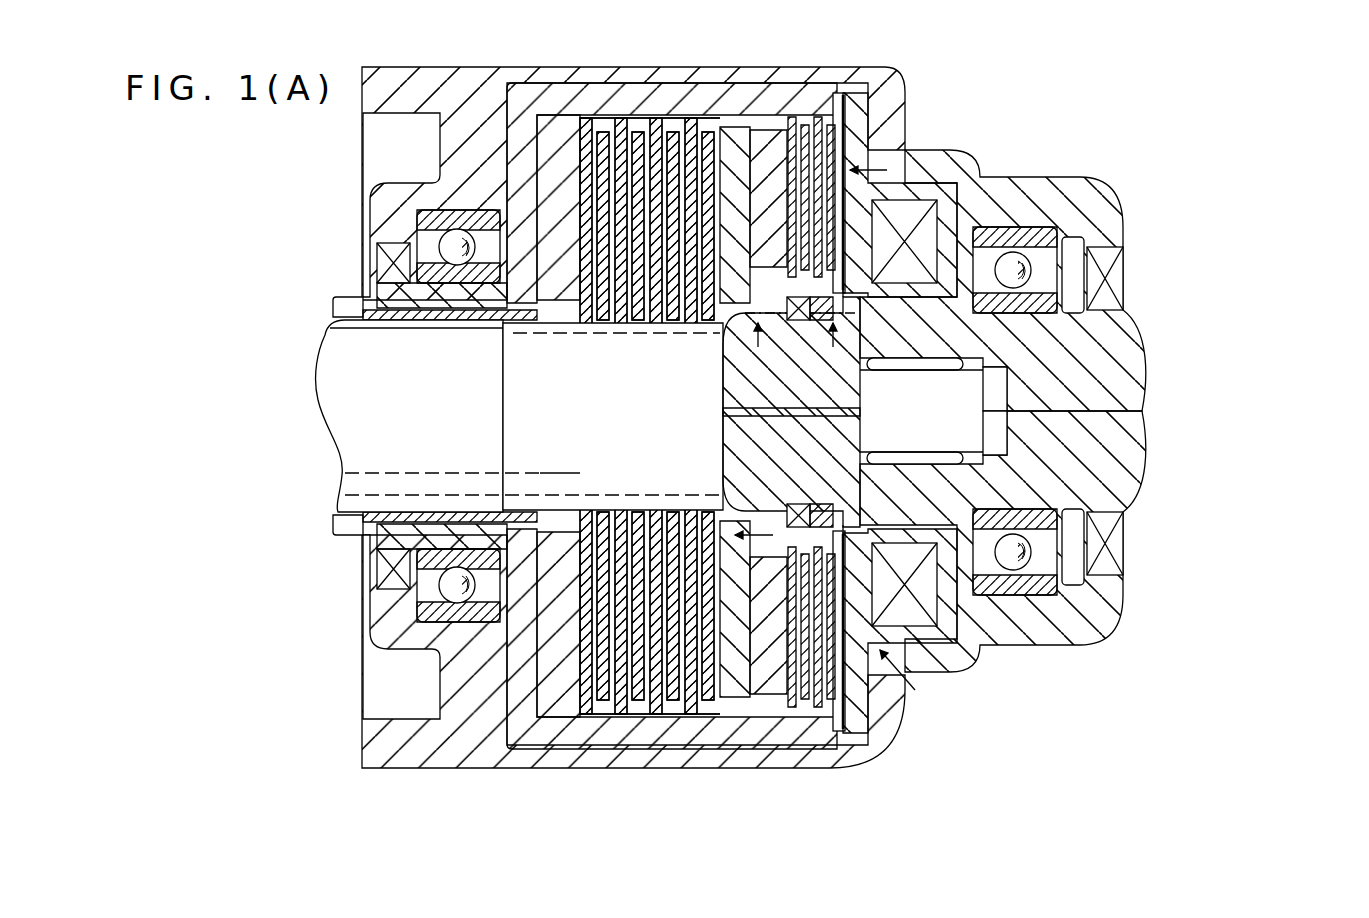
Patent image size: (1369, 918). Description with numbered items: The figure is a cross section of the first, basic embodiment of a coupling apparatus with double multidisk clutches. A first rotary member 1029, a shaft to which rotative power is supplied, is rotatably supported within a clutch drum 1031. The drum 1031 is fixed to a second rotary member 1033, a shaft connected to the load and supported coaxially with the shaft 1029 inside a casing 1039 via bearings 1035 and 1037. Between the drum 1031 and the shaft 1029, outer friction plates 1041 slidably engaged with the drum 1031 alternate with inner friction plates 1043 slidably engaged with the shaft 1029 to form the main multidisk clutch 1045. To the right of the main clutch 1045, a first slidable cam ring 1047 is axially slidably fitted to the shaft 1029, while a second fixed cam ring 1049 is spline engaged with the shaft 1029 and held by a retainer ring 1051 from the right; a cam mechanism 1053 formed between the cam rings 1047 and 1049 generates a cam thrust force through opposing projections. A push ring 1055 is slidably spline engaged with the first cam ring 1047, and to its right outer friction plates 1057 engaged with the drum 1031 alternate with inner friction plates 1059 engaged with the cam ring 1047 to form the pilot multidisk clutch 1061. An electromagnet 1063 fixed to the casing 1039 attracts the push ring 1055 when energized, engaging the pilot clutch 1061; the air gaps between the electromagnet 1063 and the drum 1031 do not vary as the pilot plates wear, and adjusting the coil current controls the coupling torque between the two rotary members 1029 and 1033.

The first rotary member 1029 is at (327, 372).
The clutch drum 1031 is at (730, 98).
The second rotary member 1033 is at (1120, 360).
The bearing 1035 is at (450, 257).
The bearing 1037 is at (1017, 280).
The casing 1039 is at (493, 67).
The outer friction plates 1041 is at (653, 92).
The inner friction plates 1043 is at (643, 326).
The main multidisk clutch 1045 is at (567, 772).
The first slidable cam ring 1047 is at (580, 474).
The second fixed cam ring 1049 is at (820, 497).
The retainer ring 1051 is at (838, 423).
The cam mechanism 1053 is at (790, 482).
The push ring 1055 is at (760, 700).
The outer friction plates 1057 is at (817, 730).
The inner friction plates 1059 is at (862, 483).
The pilot multidisk clutch 1061 is at (820, 770).
The electromagnet 1063 is at (917, 617).